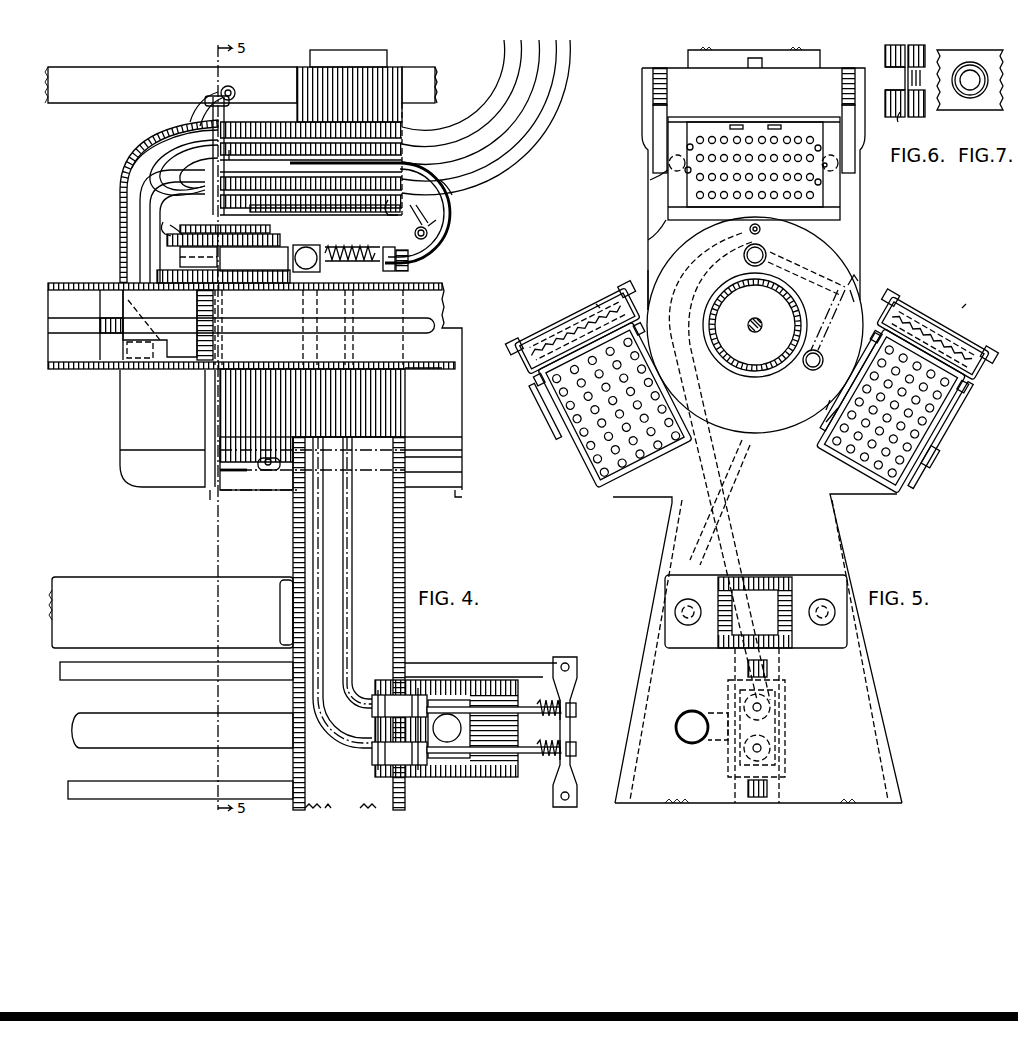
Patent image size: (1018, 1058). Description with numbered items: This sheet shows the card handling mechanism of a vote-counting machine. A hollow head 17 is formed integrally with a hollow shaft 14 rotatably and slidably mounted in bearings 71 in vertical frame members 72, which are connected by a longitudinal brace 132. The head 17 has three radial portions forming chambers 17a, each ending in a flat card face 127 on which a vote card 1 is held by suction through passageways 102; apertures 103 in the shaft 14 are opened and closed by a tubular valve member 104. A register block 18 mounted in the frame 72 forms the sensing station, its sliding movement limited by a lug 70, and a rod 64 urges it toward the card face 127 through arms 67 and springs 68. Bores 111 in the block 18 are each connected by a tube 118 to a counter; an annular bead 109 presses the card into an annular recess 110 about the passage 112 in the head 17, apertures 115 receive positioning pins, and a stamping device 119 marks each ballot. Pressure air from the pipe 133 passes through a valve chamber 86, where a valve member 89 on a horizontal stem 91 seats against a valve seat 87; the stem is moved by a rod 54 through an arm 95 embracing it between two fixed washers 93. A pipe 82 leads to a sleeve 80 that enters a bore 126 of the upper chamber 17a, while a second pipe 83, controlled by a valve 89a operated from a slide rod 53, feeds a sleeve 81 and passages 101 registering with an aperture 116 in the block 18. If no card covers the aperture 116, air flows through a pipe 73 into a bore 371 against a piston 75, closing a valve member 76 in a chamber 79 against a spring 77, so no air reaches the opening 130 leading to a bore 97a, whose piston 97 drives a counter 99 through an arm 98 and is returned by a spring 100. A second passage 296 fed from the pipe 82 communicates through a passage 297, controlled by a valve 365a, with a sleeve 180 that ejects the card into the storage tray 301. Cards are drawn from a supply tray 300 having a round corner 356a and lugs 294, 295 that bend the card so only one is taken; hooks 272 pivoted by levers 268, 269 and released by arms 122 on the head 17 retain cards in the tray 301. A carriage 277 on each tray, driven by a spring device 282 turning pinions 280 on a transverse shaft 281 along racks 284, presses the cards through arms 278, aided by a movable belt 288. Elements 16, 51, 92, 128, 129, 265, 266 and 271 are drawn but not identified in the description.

In FIG. 5, the vote card 1 is at (578, 428).
In FIG. 4, the hollow shaft 14 is at (436, 285).
In FIG. 5, the hollow shaft 14 is at (716, 333).
In FIG. 4, the body 16 is at (225, 168).
In FIG. 4, the hollow head 17 is at (118, 207).
In FIG. 4, the chambers 17a is at (136, 215).
In FIG. 4, the register block 18 is at (300, 130).
In FIG. 5, the register block 18 is at (714, 94).
In FIG. 6, the register block 18 is at (918, 116).
In FIG. 7, the register block 18 is at (982, 100).
In FIG. 4, the shaft 51 is at (75, 314).
In FIG. 5, the shaft 51 is at (758, 332).
In FIG. 4, the slide rod 53 is at (92, 680).
In FIG. 5, the slide rod 53 is at (748, 669).
In FIG. 4, the rod 54 is at (139, 780).
In FIG. 5, the rod 54 is at (748, 789).
In FIG. 4, the rod 64 is at (118, 62).
In FIG. 5, the rod 64 is at (667, 62).
In FIG. 5, the arms 67 is at (666, 168).
In FIG. 5, the springs 68 is at (650, 183).
In FIG. 5, the lug 70 is at (648, 220).
In FIG. 4, the bearings 71 is at (404, 402).
In FIG. 5, the bearings 71 is at (648, 257).
In FIG. 4, the vertical frame members 72 is at (406, 529).
In FIG. 5, the vertical frame members 72 is at (870, 681).
In FIG. 4, the pipe 73 is at (452, 193).
In FIG. 4, the piston 75 is at (412, 262).
In FIG. 4, the valve member 76 is at (330, 286).
In FIG. 4, the spring 77 is at (354, 287).
In FIG. 4, the chamber 79 is at (304, 298).
In FIG. 4, the sleeve 80 is at (266, 266).
In FIG. 5, the sleeve 80 is at (766, 252).
In FIG. 4, the projecting sleeve 81 is at (165, 227).
In FIG. 5, the projecting sleeve 81 is at (760, 230).
In FIG. 4, the pipe 82 is at (346, 506).
In FIG. 5, the pipe 82 is at (804, 683).
In FIG. 4, the second pipe 83 is at (356, 534).
In FIG. 5, the second pipe 83 is at (804, 663).
In FIG. 4, the valve chamber 86 is at (458, 680).
In FIG. 4, the valve seat 87 is at (409, 678).
In FIG. 4, the valve member 89 is at (420, 777).
In FIG. 4, the valve 89a is at (434, 680).
In FIG. 4, the stem 91 is at (540, 670).
In FIG. 4, the adjusting screw 92 is at (580, 722).
In FIG. 4, the fixed washers 93 is at (548, 670).
In FIG. 4, the arm 95 is at (568, 658).
In FIG. 4, the piston 97 is at (406, 204).
In FIG. 4, the bore 97a is at (296, 206).
In FIG. 4, the arm 98 is at (422, 216).
In FIG. 4, the counter 99 is at (430, 226).
In FIG. 4, the spring 100 is at (446, 241).
In FIG. 4, the passages 101 is at (160, 179).
In FIG. 4, the passageways 102 is at (166, 128).
In FIG. 4, the apertures 103 is at (88, 352).
In FIG. 4, the valve member 104 is at (128, 295).
In FIG. 7, the annular bead 109 is at (962, 98).
In FIG. 6, the annular recess 110 is at (894, 118).
In FIG. 5, the bores 111 is at (774, 125).
In FIG. 6, the bores 111 is at (916, 78).
In FIG. 7, the bores 111 is at (972, 90).
In FIG. 6, the passage 112 is at (900, 68).
In FIG. 5, the apertures 115 is at (690, 142).
In FIG. 5, the aperture 116 is at (762, 166).
In FIG. 4, the tube 118 is at (498, 64).
In FIG. 5, the stamping device 119 is at (736, 125).
In FIG. 4, the arms 122 is at (188, 108).
In FIG. 4, the bores 126 is at (180, 255).
In FIG. 4, the card face 127 is at (210, 92).
In FIG. 6, the card face 127 is at (904, 118).
In FIG. 4, the pivot 128 is at (452, 225).
In FIG. 4, the plate 129 is at (408, 370).
In FIG. 4, the opening 130 is at (270, 298).
In FIG. 4, the longitudinal brace 132 is at (155, 574).
In FIG. 5, the longitudinal brace 132 is at (666, 586).
In FIG. 4, the pipe 133 is at (187, 710).
In FIG. 5, the pipe 133 is at (694, 705).
In FIG. 5, the sleeve 180 is at (808, 368).
In FIG. 5, the screw 265 is at (934, 452).
In FIG. 5, the arm 266 is at (836, 402).
In FIG. 5, the lever 268 is at (890, 492).
In FIG. 5, the lever 269 is at (832, 464).
In FIG. 5, the screw 271 is at (956, 434).
In FIG. 5, the hook members 272 is at (958, 418).
In FIG. 5, the carriage 277 is at (600, 304).
In FIG. 5, the arms 278 is at (960, 392).
In FIG. 5, the pinions 280 is at (920, 294).
In FIG. 5, the transverse shaft 281 is at (1000, 316).
In FIG. 5, the spring device 282 is at (938, 313).
In FIG. 5, the racks 284 is at (628, 308).
In FIG. 4, the movable belt 288 is at (462, 464).
In FIG. 5, the lugs 294 is at (660, 478).
In FIG. 5, the lugs 295 is at (564, 388).
In FIG. 5, the second passage 296 is at (798, 276).
In FIG. 5, the passage 297 is at (838, 320).
In FIG. 4, the supply tray 300 is at (462, 498).
In FIG. 5, the supply tray 300 is at (556, 463).
In FIG. 5, the storage tray 301 is at (960, 405).
In FIG. 5, the round corner 356a is at (734, 483).
In FIG. 5, the valve 365a is at (856, 286).
In FIG. 4, the bore 371 is at (392, 288).